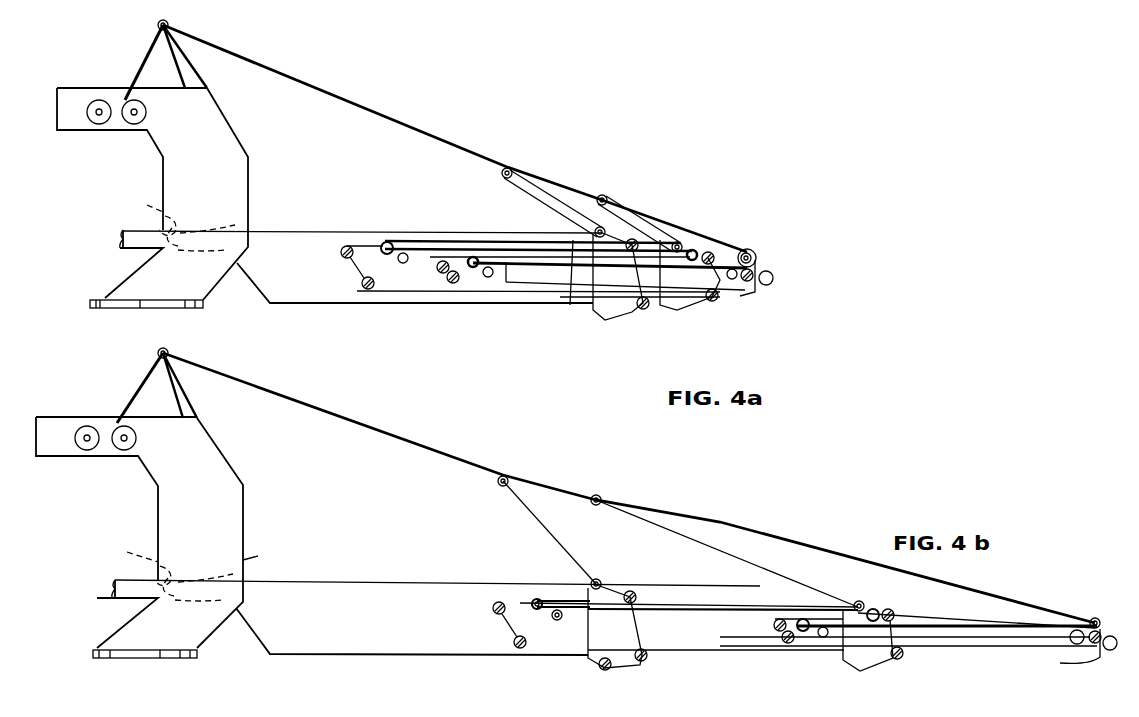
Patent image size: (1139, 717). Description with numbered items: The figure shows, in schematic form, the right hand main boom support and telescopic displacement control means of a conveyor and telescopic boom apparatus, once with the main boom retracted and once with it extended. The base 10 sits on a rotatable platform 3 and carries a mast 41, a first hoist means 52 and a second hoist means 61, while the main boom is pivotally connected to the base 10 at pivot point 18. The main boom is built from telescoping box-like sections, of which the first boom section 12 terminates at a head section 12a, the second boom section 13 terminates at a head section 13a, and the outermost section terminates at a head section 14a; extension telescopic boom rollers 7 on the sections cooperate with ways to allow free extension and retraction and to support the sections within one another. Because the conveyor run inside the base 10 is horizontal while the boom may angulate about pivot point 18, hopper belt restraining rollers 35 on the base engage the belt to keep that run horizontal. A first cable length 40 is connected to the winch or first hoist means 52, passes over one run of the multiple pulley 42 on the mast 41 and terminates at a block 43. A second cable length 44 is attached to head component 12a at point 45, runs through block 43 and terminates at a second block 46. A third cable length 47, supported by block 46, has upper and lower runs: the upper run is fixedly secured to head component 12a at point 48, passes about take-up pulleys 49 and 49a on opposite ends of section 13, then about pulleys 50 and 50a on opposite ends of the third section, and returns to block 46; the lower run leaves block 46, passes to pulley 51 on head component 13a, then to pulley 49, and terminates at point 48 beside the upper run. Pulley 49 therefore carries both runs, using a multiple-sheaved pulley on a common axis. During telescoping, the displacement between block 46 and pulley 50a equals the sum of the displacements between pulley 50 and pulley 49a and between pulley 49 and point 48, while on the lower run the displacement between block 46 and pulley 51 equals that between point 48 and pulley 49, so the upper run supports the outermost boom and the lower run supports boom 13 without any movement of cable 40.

In FIG. 4A, the rotatable platform 3 is at (208, 310).
In FIG. 4B, the rotatable platform 3 is at (200, 652).
In FIG. 4A, the extension telescopic boom rollers 7 is at (348, 272).
In FIG. 4B, the extension telescopic boom rollers 7 is at (492, 598).
In FIG. 4A, the base 10 is at (247, 157).
In FIG. 4B, the base 10 is at (248, 492).
In FIG. 4B, the first boom section 12 is at (370, 586).
In FIG. 4A, the head section of first boom section 12a is at (609, 324).
In FIG. 4B, the head section of first boom section 12a is at (628, 598).
In FIG. 4B, the second boom section 13 is at (726, 606).
In FIG. 4A, the head section of second boom section 13a is at (704, 312).
In FIG. 4B, the head section of second boom section 13a is at (894, 662).
In FIG. 4A, the head section of third boom section 14a is at (773, 279).
In FIG. 4B, the head section of third boom section 14a is at (1100, 662).
In FIG. 4A, the pivot point 18 is at (248, 230).
In FIG. 4B, the pivot point 18 is at (259, 563).
In FIG. 4A, the hopper belt restraining rollers 35 is at (173, 220).
In FIG. 4B, the hopper belt restraining rollers 35 is at (165, 569).
In FIG. 4A, the first cable length 40 is at (462, 146).
In FIG. 4B, the first cable length 40 is at (386, 432).
In FIG. 4A, the mast 41 is at (196, 80).
In FIG. 4B, the mast 41 is at (198, 408).
In FIG. 4A, the pulley 42 is at (168, 24).
In FIG. 4B, the pulley 42 is at (168, 362).
In FIG. 4A, the block 43 is at (502, 175).
In FIG. 4B, the block 43 is at (498, 482).
In FIG. 4A, the second cable length 44 is at (528, 190).
In FIG. 4B, the second cable length 44 is at (555, 518).
In FIG. 4A, the attachment point 45 is at (593, 228).
In FIG. 4B, the attachment point 45 is at (598, 580).
In FIG. 4A, the second block 46 is at (606, 198).
In FIG. 4B, the second block 46 is at (596, 495).
In FIG. 4A, the third cable length 47 is at (654, 221).
In FIG. 4B, the third cable length 47 is at (684, 520).
In FIG. 4A, the fixing point 48 is at (572, 304).
In FIG. 4B, the fixing point 48 is at (587, 604).
In FIG. 4A, the take-up pulley 49 is at (367, 248).
In FIG. 4B, the take-up pulley 49 is at (537, 662).
In FIG. 4A, the take-up pulley 49a is at (712, 242).
In FIG. 4B, the take-up pulley 49a is at (879, 612).
In FIG. 4A, the pulley 50 is at (447, 300).
In FIG. 4B, the pulley 50 is at (804, 635).
In FIG. 4A, the pulley 50a is at (756, 257).
In FIG. 4B, the pulley 50a is at (1048, 616).
In FIG. 4A, the pulley 51 is at (405, 252).
In FIG. 4B, the pulley 51 is at (560, 620).
In FIG. 4A, the first hoist means 52 is at (146, 102).
In FIG. 4B, the first hoist means 52 is at (138, 430).
In FIG. 4A, the second hoist means 61 is at (98, 100).
In FIG. 4B, the second hoist means 61 is at (87, 424).